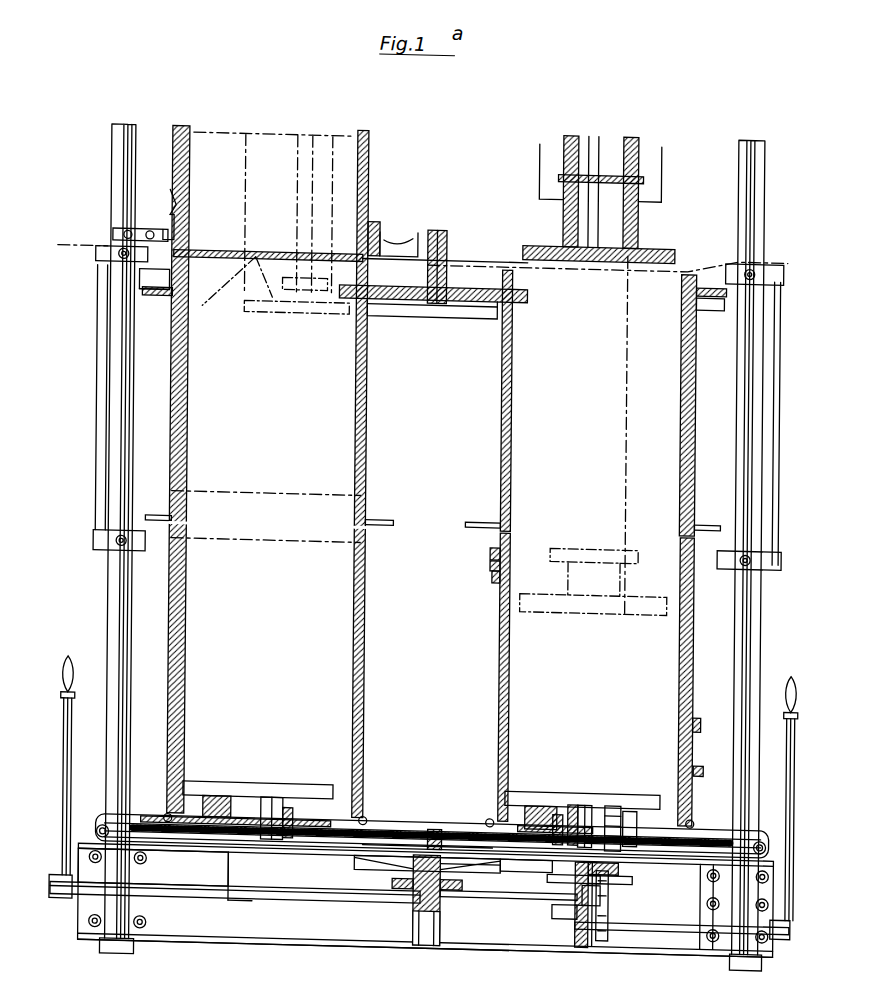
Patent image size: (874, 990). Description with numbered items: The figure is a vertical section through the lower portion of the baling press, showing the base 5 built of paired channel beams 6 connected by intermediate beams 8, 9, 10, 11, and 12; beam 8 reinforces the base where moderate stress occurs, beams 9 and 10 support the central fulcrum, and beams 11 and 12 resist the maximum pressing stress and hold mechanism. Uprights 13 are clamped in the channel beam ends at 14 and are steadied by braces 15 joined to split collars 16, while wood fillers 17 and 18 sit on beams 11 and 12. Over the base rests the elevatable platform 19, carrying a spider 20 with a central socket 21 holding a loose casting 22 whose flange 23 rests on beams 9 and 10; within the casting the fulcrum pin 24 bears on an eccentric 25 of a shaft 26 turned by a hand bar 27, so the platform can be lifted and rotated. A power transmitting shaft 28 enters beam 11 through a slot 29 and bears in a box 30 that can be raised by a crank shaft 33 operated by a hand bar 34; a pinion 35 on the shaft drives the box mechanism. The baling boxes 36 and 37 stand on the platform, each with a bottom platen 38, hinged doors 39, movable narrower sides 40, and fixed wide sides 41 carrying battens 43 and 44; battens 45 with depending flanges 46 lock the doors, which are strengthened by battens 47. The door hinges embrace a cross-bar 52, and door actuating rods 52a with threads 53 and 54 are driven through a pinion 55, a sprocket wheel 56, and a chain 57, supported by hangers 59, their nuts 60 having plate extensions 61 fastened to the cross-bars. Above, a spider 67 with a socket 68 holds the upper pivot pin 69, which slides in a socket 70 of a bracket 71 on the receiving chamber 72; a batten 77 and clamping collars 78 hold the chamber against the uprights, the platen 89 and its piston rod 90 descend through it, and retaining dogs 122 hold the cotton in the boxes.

The base 5 is at (424, 957).
The channel beam 6 is at (215, 930).
The intermediate beam 8 is at (237, 862).
The intermediate beam 9 is at (98, 243).
The intermediate beam 10 is at (455, 900).
The intermediate beam 11 is at (526, 869).
The intermediate beam 12 is at (645, 866).
The upright 13 is at (180, 483).
The clamp 14 is at (98, 920).
The brace 15 is at (100, 425).
The split collar 16 is at (112, 250).
The wood filler 17 is at (575, 905).
The wood filler 18 is at (630, 856).
The platform 19 is at (108, 822).
The spider 20 is at (362, 860).
The central socket 21 is at (470, 862).
The casting 22 is at (400, 873).
The flange 23 is at (460, 878).
The pin 24 is at (410, 885).
The eccentric 25 is at (448, 912).
The shaft 26 is at (300, 893).
The hand bar 27 is at (70, 770).
The power transmitting shaft 28 is at (590, 880).
The slot 29 is at (560, 866).
The box 30 is at (568, 904).
The crank shaft 33 is at (608, 925).
The hand bar 34 is at (801, 792).
The pinion 35 is at (582, 904).
The baling box 36 is at (505, 648).
The baling box 37 is at (174, 641).
The bottom platen 38 is at (230, 778).
The door 39 is at (706, 725).
The narrower side 40 is at (684, 665).
The fixed wide side 41 is at (505, 454).
The batten 43 is at (170, 292).
The batten 44 is at (385, 306).
The batten 45 is at (500, 512).
The depending flange member 46 is at (498, 518).
The batten 47 is at (498, 565).
The cross-bar 52 is at (300, 806).
The door actuating rod 52a is at (442, 820).
The screw-thread 53 is at (490, 830).
The screw-thread 54 is at (338, 815).
The pinion 55 is at (592, 790).
The sprocket wheel 56 is at (638, 795).
The chain 57 is at (620, 790).
The hanger 59 is at (280, 790).
The nut 60 is at (578, 790).
The plate extension 61 is at (535, 790).
The spider 67 is at (455, 276).
The central socket 68 is at (440, 306).
The upper pivot pin 69 is at (448, 225).
The socket 70 is at (436, 220).
The bracket 71 is at (388, 225).
The receiving chamber 72 is at (372, 150).
The batten 77 is at (180, 185).
The clamping collar 78 is at (148, 226).
The platen 89 is at (300, 306).
The piston rod 90 is at (298, 203).
The retaining dog 122 is at (150, 275).